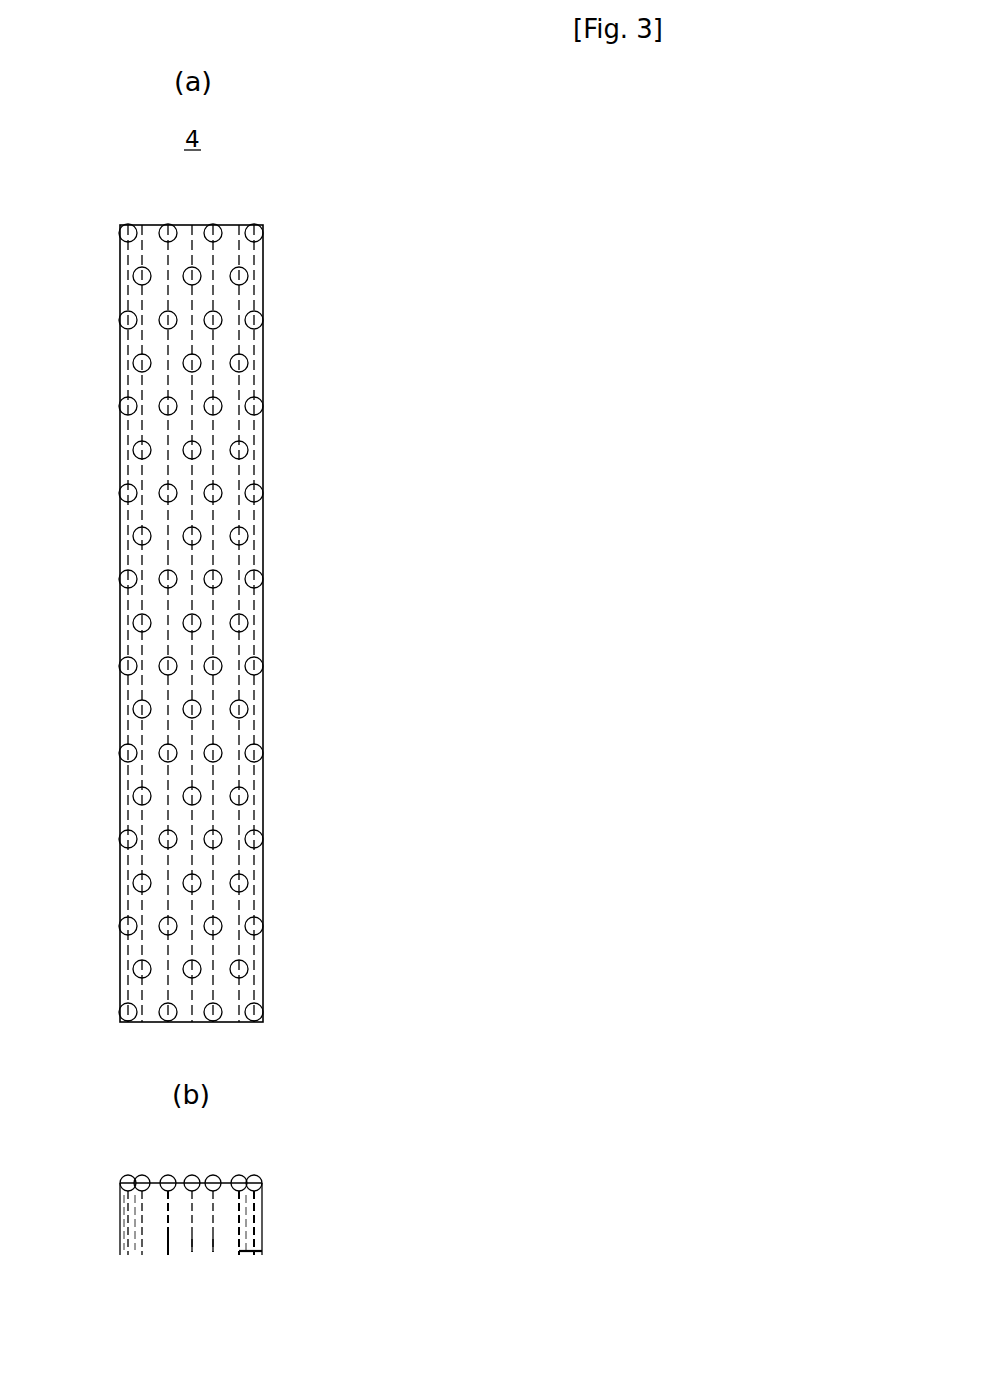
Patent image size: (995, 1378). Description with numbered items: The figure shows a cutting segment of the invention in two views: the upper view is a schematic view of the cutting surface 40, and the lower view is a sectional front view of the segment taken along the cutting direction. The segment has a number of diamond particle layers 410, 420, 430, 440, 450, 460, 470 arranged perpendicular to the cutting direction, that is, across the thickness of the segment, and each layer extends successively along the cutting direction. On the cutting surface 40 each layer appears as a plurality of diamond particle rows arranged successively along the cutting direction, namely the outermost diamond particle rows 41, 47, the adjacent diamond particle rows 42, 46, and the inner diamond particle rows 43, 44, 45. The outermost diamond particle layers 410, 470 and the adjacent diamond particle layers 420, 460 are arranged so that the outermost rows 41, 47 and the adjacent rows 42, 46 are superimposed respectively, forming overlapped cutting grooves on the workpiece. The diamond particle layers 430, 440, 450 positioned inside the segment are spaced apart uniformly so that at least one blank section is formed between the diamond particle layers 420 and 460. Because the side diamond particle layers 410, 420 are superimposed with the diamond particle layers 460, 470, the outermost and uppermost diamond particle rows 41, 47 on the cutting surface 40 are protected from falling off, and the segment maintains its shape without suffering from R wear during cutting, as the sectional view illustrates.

The cutting surface 40 is at (223, 863).
The outermost diamond particle row 41 is at (120, 233).
The adjacent diamond particle row 42 is at (133, 276).
The diamond particle row 43 is at (163, 232).
The diamond particle row 44 is at (190, 275).
The diamond particle row 45 is at (216, 233).
The adjacent diamond particle row 46 is at (248, 276).
The outermost diamond particle row 47 is at (260, 233).
The outermost diamond particle layer 410 is at (128, 1212).
The adjacent diamond particle layer 420 is at (142, 1232).
The diamond particle layer 430 is at (167, 1237).
The diamond particle layer 440 is at (190, 1237).
The diamond particle layer 450 is at (213, 1237).
The adjacent diamond particle layer 460 is at (262, 1253).
The outermost diamond particle layer 470 is at (256, 1232).